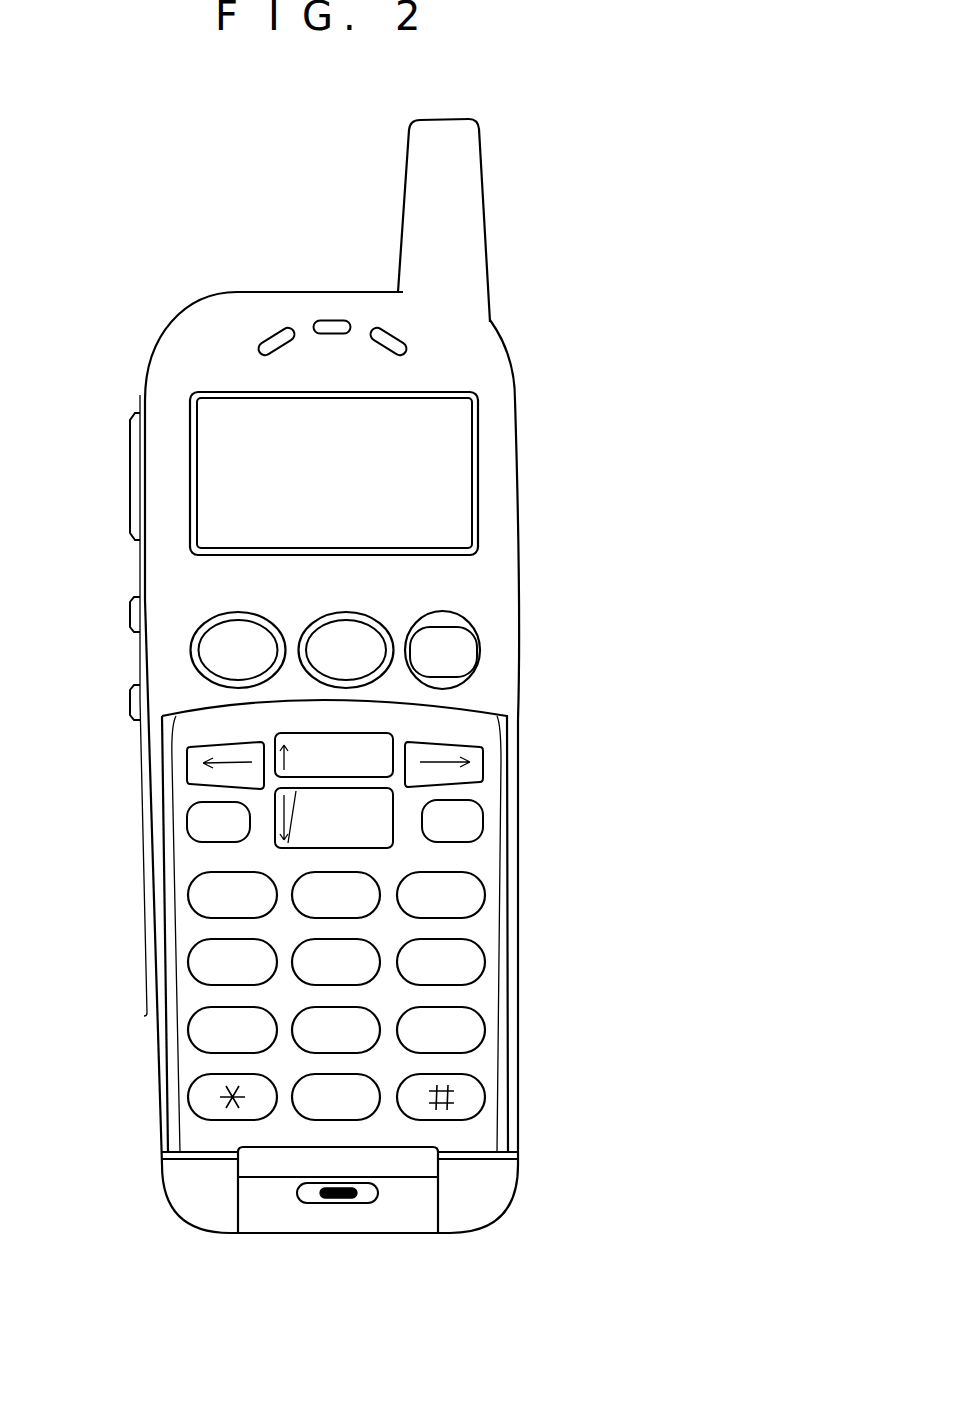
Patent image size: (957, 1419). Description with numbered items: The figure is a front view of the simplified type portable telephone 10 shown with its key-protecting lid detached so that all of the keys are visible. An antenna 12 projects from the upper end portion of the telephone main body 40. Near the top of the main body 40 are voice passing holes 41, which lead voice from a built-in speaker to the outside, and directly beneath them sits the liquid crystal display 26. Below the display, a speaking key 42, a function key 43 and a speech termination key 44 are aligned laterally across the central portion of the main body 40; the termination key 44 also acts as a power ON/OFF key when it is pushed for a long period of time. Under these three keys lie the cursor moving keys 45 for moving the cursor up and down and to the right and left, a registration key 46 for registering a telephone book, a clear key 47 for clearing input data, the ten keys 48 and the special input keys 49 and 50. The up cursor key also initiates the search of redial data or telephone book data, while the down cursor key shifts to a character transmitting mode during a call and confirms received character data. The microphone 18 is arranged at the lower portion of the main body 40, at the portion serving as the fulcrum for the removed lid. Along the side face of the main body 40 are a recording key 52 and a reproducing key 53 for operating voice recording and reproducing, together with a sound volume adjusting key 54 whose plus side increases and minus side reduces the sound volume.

The telephone 10 is at (174, 1226).
The antenna 12 is at (453, 184).
The microphone 18 is at (366, 1197).
The liquid crystal display 26 is at (420, 502).
The telephone main body 40 is at (497, 404).
The voice passing holes 41 is at (388, 333).
The speaking key 42 is at (220, 620).
The function key 43 is at (328, 620).
The speech termination key 44 is at (438, 625).
The cursor moving keys 45 is at (399, 728).
The registration key 46 is at (187, 823).
The clear key 47 is at (483, 820).
The ten keys 48 is at (484, 992).
The special input key 49 is at (202, 1101).
The special input key 50 is at (473, 1100).
The recording key 52 is at (130, 610).
The reproducing key 53 is at (130, 704).
The sound volume adjusting key 54 is at (130, 464).